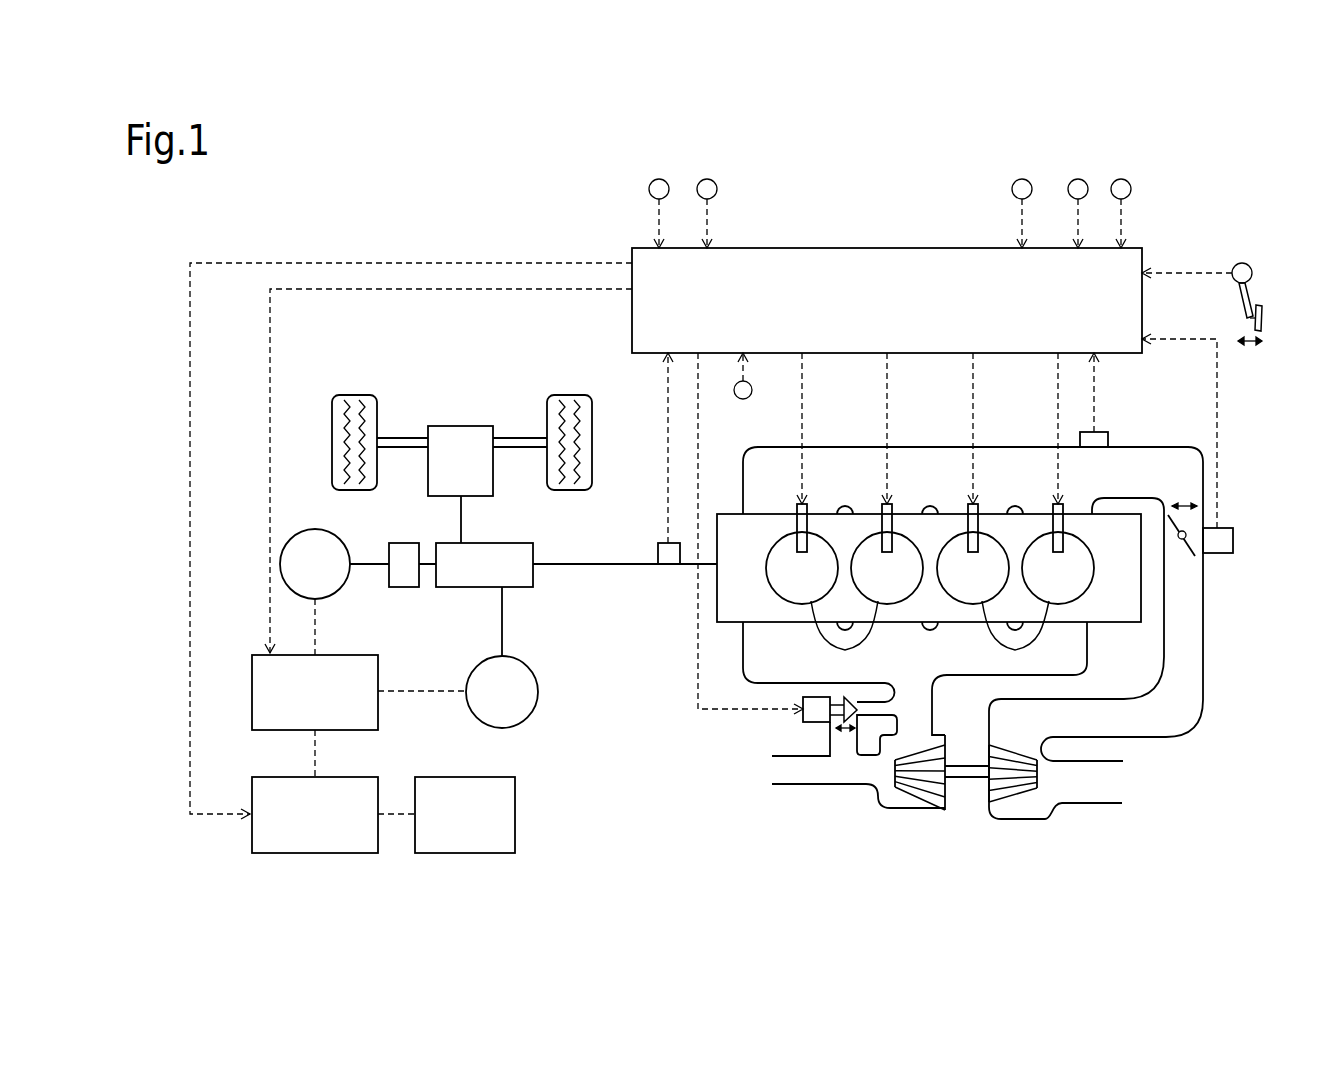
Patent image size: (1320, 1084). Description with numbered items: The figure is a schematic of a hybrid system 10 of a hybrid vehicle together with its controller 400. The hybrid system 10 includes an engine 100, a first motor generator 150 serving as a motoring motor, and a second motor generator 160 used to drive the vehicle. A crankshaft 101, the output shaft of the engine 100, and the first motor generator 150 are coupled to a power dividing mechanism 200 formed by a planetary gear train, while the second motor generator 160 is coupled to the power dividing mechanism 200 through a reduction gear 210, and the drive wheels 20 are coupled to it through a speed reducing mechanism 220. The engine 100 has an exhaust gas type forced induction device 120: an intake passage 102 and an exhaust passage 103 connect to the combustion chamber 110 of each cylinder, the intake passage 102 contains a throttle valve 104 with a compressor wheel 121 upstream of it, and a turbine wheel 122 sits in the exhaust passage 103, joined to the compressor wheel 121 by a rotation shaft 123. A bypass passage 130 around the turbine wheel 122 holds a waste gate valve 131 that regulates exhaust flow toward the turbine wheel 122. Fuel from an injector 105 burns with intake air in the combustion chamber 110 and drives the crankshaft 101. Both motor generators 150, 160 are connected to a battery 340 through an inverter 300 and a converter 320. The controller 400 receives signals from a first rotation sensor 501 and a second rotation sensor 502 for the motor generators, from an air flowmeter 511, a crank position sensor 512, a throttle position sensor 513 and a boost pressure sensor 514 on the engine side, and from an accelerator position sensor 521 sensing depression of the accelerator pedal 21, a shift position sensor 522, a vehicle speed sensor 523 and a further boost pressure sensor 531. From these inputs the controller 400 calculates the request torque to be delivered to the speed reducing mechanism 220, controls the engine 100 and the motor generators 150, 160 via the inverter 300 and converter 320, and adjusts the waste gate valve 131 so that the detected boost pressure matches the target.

The hybrid system 10 is at (296, 250).
The drive wheels 20 is at (355, 395).
The accelerator pedal 21 is at (1246, 314).
The engine 100 is at (988, 617).
The crankshaft 101 is at (632, 565).
The intake passage 102 is at (1204, 662).
The exhaust passage 103 is at (786, 784).
The throttle valve 104 is at (1188, 552).
The injector 105 is at (808, 527).
The combustion chamber 110 is at (930, 602).
The forced induction device 120 is at (933, 808).
The compressor wheel 121 is at (1015, 805).
The turbine wheel 122 is at (918, 810).
The rotation shaft 123 is at (968, 790).
The bypass passage 130 is at (888, 700).
The waste gate valve 131 is at (803, 722).
The first motor generator 150 is at (548, 635).
The second motor generator 160 is at (340, 540).
The power dividing mechanism 200 is at (533, 580).
The reduction gear 210 is at (404, 587).
The speed reducing mechanism 220 is at (461, 426).
The inverter 300 is at (378, 713).
The converter 320 is at (365, 777).
The battery 340 is at (515, 810).
The controller 400 is at (858, 247).
The first rotation sensor 501 is at (658, 179).
The second rotation sensor 502 is at (709, 179).
The air flowmeter 511 is at (1108, 440).
The crank position sensor 512 is at (658, 556).
The throttle position sensor 513 is at (1233, 540).
The boost pressure sensor 514 is at (748, 399).
The accelerator position sensor 521 is at (1242, 263).
The shift position sensor 522 is at (1121, 179).
The vehicle speed sensor 523 is at (1078, 179).
The boost pressure sensor 531 is at (1021, 179).